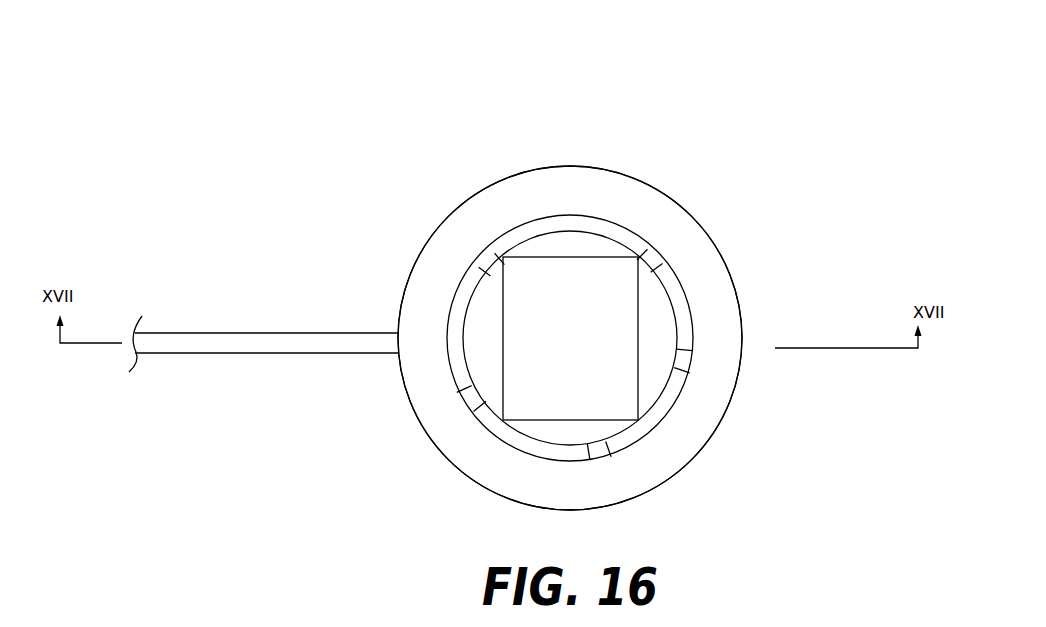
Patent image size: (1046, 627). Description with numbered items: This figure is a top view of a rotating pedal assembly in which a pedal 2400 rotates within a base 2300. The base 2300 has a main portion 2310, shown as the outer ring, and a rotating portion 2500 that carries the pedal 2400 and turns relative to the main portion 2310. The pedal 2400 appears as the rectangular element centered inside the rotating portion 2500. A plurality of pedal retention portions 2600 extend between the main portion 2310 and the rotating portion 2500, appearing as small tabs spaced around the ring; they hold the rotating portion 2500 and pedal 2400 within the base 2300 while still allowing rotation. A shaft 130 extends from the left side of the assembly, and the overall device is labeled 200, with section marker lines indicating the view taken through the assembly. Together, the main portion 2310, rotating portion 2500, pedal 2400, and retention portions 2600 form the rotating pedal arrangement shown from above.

The surgical instrument assembly 200 is at (856, 152).
The shaft 130 is at (216, 343).
The base 2300 is at (687, 242).
The main portion 2310 is at (720, 307).
The pedal 2400 is at (573, 283).
The rotating portion 2500 is at (660, 337).
The pedal retention portions 2600 is at (489, 249).